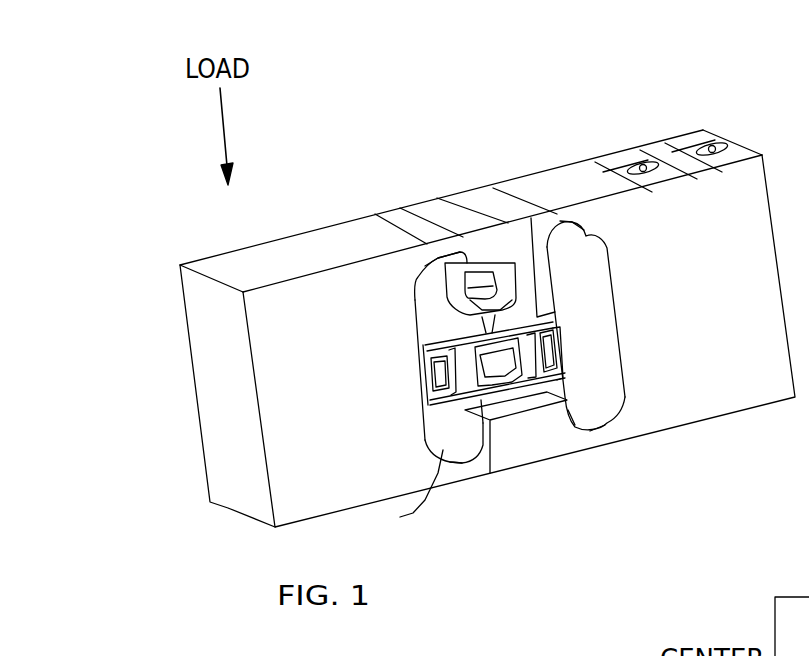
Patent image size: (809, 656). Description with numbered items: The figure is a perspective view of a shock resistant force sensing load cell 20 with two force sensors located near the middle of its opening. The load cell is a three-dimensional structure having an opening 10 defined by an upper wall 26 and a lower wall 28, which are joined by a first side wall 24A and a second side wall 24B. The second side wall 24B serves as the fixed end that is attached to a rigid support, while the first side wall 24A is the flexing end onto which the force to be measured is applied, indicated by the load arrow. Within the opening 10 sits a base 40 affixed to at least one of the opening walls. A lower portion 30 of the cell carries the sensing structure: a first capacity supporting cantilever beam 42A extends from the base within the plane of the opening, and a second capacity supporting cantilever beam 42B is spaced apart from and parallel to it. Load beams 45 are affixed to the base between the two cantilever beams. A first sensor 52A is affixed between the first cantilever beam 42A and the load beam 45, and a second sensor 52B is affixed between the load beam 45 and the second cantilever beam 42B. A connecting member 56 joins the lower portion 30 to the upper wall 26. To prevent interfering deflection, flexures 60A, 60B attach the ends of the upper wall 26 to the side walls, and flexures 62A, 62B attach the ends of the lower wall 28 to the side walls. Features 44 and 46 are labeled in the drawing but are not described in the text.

The opening 10 is at (443, 323).
The force sensing load cell 20 is at (478, 121).
The first side wall 24A is at (333, 404).
The second side wall 24B is at (713, 305).
The upper wall 26 is at (568, 192).
The lower wall 28 is at (527, 447).
The lower portion 30 is at (420, 327).
The base 40 is at (480, 285).
The first capacity supporting cantilever beam 42A is at (446, 437).
The second capacity supporting cantilever beam 42B is at (605, 452).
The notch 44 is at (460, 450).
The load beams 45 is at (467, 457).
The side window 46 is at (557, 353).
The first sensor 52A is at (410, 380).
The second sensor 52B is at (480, 298).
The connecting member 56 is at (490, 290).
The flexure 60A is at (440, 250).
The flexure 60B is at (557, 220).
The flexure 62A is at (463, 448).
The flexure 62B is at (612, 450).